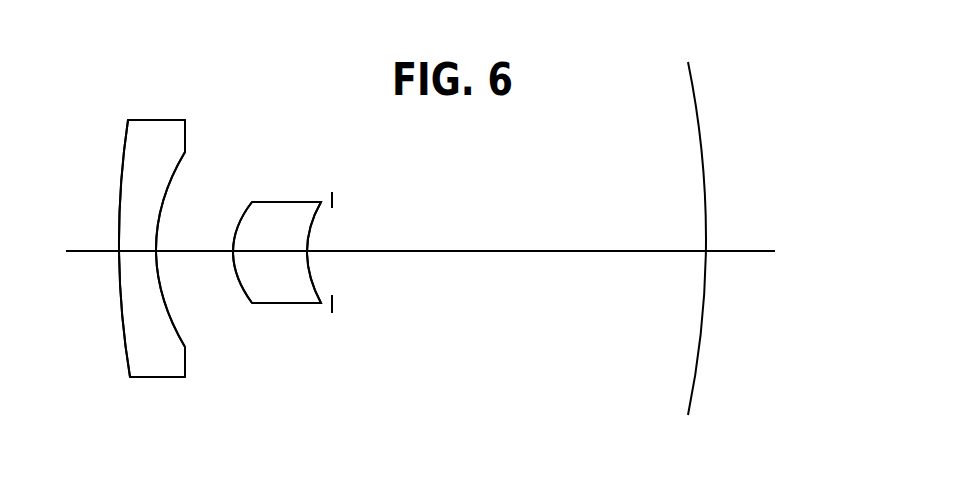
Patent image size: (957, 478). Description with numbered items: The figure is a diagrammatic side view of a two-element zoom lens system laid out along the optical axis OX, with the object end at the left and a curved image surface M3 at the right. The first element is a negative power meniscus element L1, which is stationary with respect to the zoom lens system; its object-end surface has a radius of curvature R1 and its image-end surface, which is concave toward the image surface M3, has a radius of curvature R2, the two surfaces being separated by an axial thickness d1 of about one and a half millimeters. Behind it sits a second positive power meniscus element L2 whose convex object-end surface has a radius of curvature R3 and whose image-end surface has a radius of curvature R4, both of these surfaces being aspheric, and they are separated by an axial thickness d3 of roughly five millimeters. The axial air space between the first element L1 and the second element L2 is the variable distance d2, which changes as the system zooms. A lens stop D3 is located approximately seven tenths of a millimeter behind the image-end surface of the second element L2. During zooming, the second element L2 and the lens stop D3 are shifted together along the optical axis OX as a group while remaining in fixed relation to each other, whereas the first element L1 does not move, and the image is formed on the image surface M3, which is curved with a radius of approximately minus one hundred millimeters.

The first negative power meniscus element L1 is at (173, 119).
The second positive power meniscus element L2 is at (298, 202).
The radius of curvature of first surface R1 is at (119, 287).
The radius of curvature of second surface R2 is at (167, 305).
The radius of curvature of third surface R3 is at (241, 287).
The radius of curvature of fourth surface R4 is at (310, 273).
The axial thickness of first lens element d1 is at (135, 252).
The variable axial air gap d2 is at (182, 251).
The axial thickness of second lens element d3 is at (250, 252).
The lens stop D3 is at (333, 200).
The optical axis OX is at (539, 251).
The image surface M3 is at (705, 165).